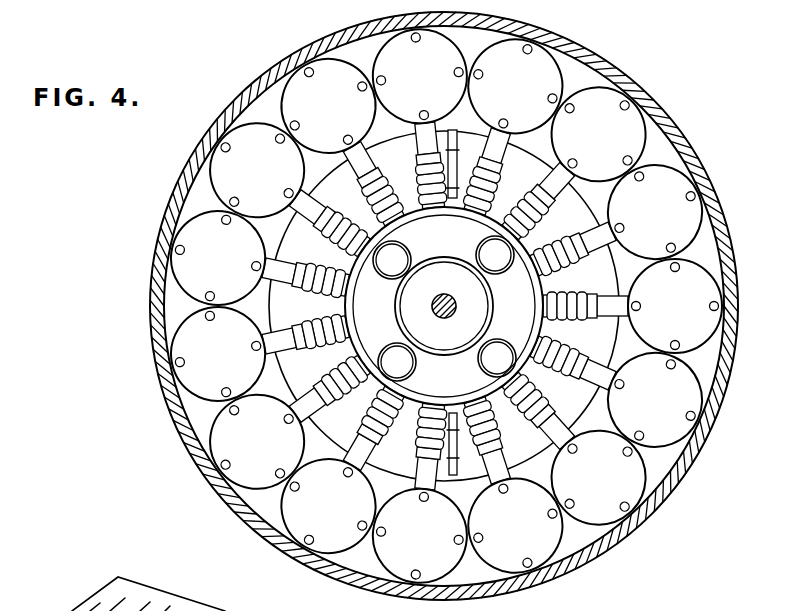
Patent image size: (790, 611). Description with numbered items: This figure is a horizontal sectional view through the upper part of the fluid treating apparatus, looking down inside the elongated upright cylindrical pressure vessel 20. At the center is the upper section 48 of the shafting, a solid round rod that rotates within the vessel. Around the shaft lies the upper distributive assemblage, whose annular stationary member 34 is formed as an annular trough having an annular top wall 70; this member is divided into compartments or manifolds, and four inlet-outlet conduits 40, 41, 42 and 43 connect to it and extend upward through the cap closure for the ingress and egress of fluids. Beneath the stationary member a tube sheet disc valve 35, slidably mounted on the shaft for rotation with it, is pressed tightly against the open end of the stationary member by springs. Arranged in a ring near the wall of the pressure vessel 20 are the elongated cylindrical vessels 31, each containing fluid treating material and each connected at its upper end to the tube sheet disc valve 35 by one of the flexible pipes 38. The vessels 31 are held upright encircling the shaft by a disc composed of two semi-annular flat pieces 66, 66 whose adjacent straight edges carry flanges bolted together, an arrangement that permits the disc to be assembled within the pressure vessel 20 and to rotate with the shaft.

The pressure vessel 20 is at (178, 183).
The cylindrical vessels 31 is at (177, 255).
The annular stationary member 34 is at (476, 321).
The tube sheet disc valve 35 is at (532, 242).
The flexible pipes 38 is at (507, 193).
The inlet-outlet conduit 40 is at (383, 347).
The inlet-outlet conduit 41 is at (408, 250).
The inlet-outlet conduit 42 is at (500, 274).
The inlet-outlet conduit 43 is at (485, 372).
The upper section 48 is at (448, 299).
The semi-annular flat pieces 66 is at (405, 166).
The annular top wall 70 is at (383, 308).